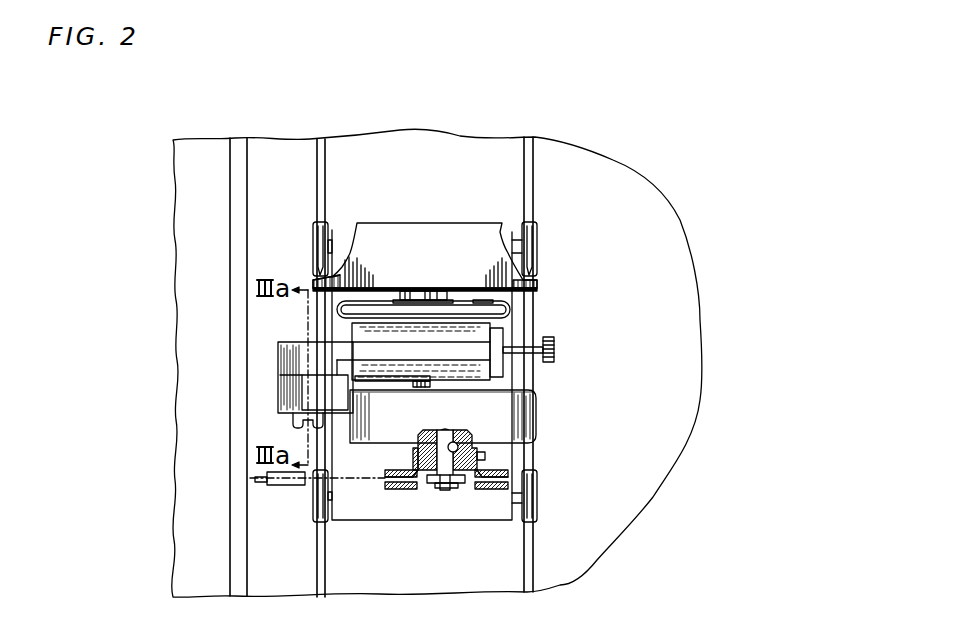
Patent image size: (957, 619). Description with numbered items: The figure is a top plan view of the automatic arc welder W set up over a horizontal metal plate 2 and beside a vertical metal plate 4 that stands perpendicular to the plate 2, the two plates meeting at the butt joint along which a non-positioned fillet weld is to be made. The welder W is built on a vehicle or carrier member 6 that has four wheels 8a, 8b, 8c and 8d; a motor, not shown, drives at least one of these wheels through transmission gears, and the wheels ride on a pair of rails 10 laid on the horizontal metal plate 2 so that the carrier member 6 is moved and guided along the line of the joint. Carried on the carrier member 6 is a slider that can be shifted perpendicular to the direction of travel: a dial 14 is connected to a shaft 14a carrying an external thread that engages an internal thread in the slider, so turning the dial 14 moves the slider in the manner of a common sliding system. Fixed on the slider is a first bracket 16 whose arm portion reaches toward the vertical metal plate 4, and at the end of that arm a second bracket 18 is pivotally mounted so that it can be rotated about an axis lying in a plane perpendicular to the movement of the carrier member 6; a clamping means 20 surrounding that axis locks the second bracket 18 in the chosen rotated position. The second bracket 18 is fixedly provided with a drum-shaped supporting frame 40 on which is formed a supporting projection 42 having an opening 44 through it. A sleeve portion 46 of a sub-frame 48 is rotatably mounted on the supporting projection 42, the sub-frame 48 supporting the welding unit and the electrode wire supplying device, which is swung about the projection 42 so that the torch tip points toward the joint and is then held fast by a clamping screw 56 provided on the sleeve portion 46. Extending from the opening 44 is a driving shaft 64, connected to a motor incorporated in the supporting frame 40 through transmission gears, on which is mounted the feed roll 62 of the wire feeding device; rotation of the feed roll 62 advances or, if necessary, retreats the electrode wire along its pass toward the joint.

The horizontal metal plate 2 is at (635, 444).
The vertical metal plate 4 is at (235, 447).
The carrier member 6 is at (370, 498).
The wheel 8a is at (313, 497).
The wheel 8b is at (537, 498).
The wheel 8c is at (312, 246).
The wheel 8d is at (535, 248).
The rails 10 is at (325, 175).
The dial 14 is at (552, 348).
The shaft 14a is at (518, 343).
The first bracket 16 is at (305, 360).
The second bracket 18 is at (278, 383).
The clamping means 20 is at (293, 420).
The supporting frame 40 is at (397, 421).
The supporting projection 42 is at (442, 430).
The opening 44 is at (455, 429).
The sleeve portion 46 is at (412, 460).
The sub-frame 48 is at (400, 490).
The clamping screw 56 is at (485, 458).
The feed roll 62 is at (432, 485).
The driving shaft 64 is at (450, 488).
The automatic arc welder W is at (541, 416).